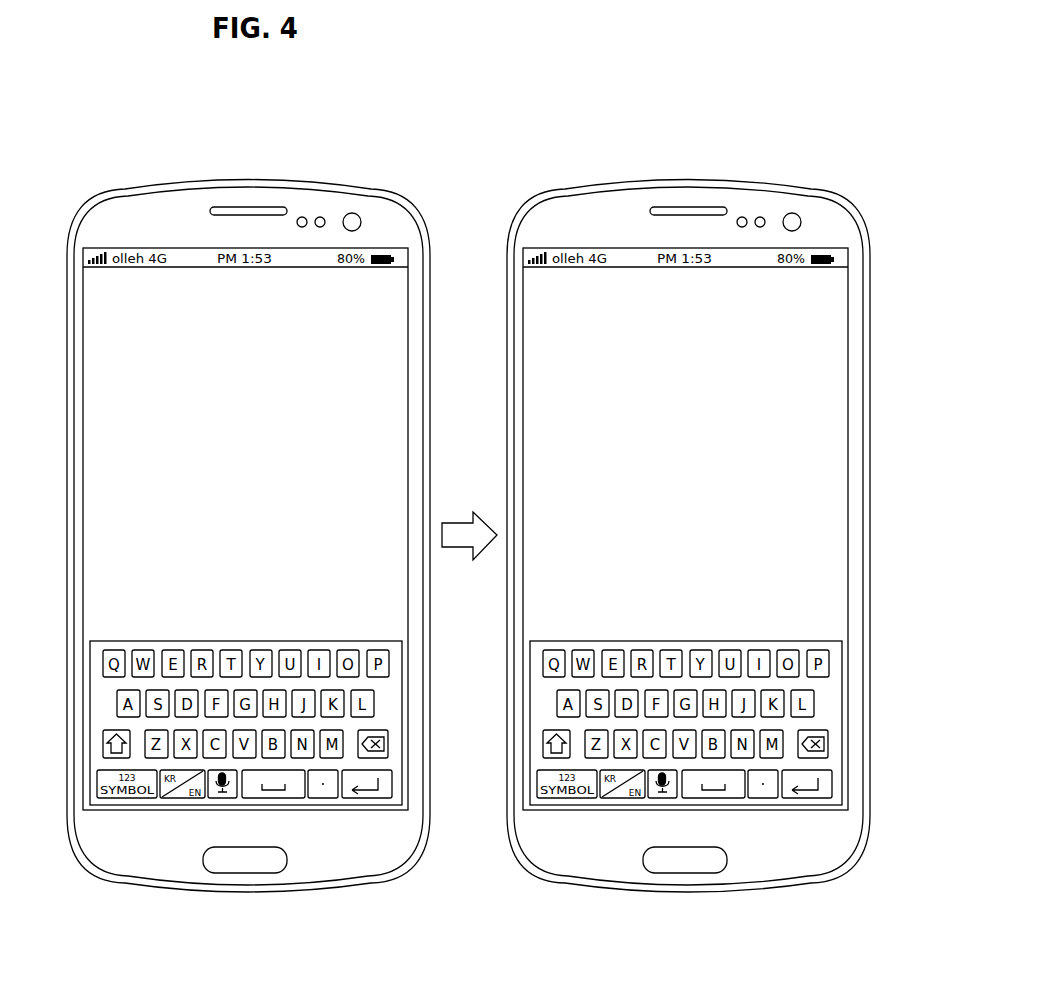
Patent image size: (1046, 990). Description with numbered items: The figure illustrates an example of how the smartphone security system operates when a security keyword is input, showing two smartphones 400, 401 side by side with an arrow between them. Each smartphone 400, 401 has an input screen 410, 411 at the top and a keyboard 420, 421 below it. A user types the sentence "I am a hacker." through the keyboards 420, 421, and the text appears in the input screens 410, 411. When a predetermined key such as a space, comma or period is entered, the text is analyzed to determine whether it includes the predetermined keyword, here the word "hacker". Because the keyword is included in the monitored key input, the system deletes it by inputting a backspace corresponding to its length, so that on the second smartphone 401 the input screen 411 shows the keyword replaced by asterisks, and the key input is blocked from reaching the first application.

The smartphone 400 is at (280, 491).
The smartphone 401 is at (721, 491).
The input screen 410 is at (377, 432).
The input screen 411 is at (725, 529).
The keyboard 420 is at (402, 722).
The keyboard 421 is at (732, 723).